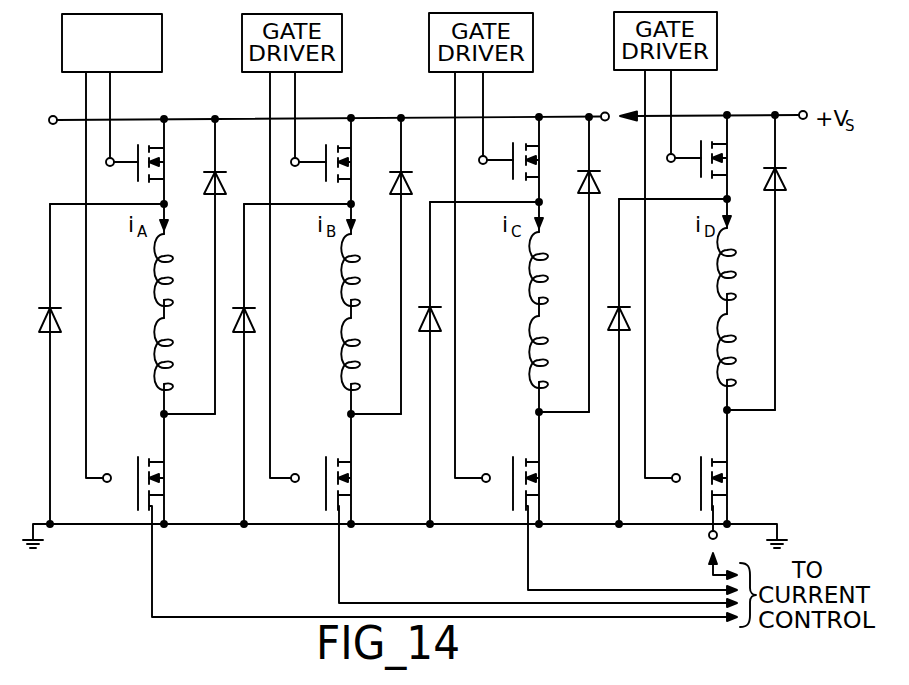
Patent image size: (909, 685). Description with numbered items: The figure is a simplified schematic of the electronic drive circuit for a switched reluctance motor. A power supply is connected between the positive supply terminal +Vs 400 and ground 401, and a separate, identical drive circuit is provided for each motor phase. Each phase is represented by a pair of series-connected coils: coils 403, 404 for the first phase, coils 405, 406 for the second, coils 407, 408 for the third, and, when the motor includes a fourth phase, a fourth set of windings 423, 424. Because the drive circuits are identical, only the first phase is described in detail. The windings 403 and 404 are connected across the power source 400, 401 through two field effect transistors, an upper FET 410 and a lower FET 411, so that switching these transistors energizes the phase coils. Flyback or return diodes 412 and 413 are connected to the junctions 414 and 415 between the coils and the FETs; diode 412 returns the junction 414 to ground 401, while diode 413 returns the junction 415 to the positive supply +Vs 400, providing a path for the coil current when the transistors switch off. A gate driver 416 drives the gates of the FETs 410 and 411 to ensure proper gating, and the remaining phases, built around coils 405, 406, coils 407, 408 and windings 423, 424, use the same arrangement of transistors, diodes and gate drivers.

The +Vs supply terminal 400 is at (58, 126).
The ground 401 is at (107, 526).
The coil 403 is at (187, 257).
The coil 404 is at (172, 355).
The coil 405 is at (362, 257).
The coil 406 is at (363, 358).
The coil 407 is at (552, 255).
The coil 408 is at (552, 357).
The field effect transistor 410 is at (203, 167).
The field effect transistor 411 is at (207, 495).
The flyback diode 412 is at (62, 318).
The flyback diode 413 is at (225, 177).
The junction 414 is at (166, 204).
The junction 415 is at (166, 416).
The gate driver 416 is at (162, 52).
The winding 423 is at (745, 251).
The winding 424 is at (746, 345).